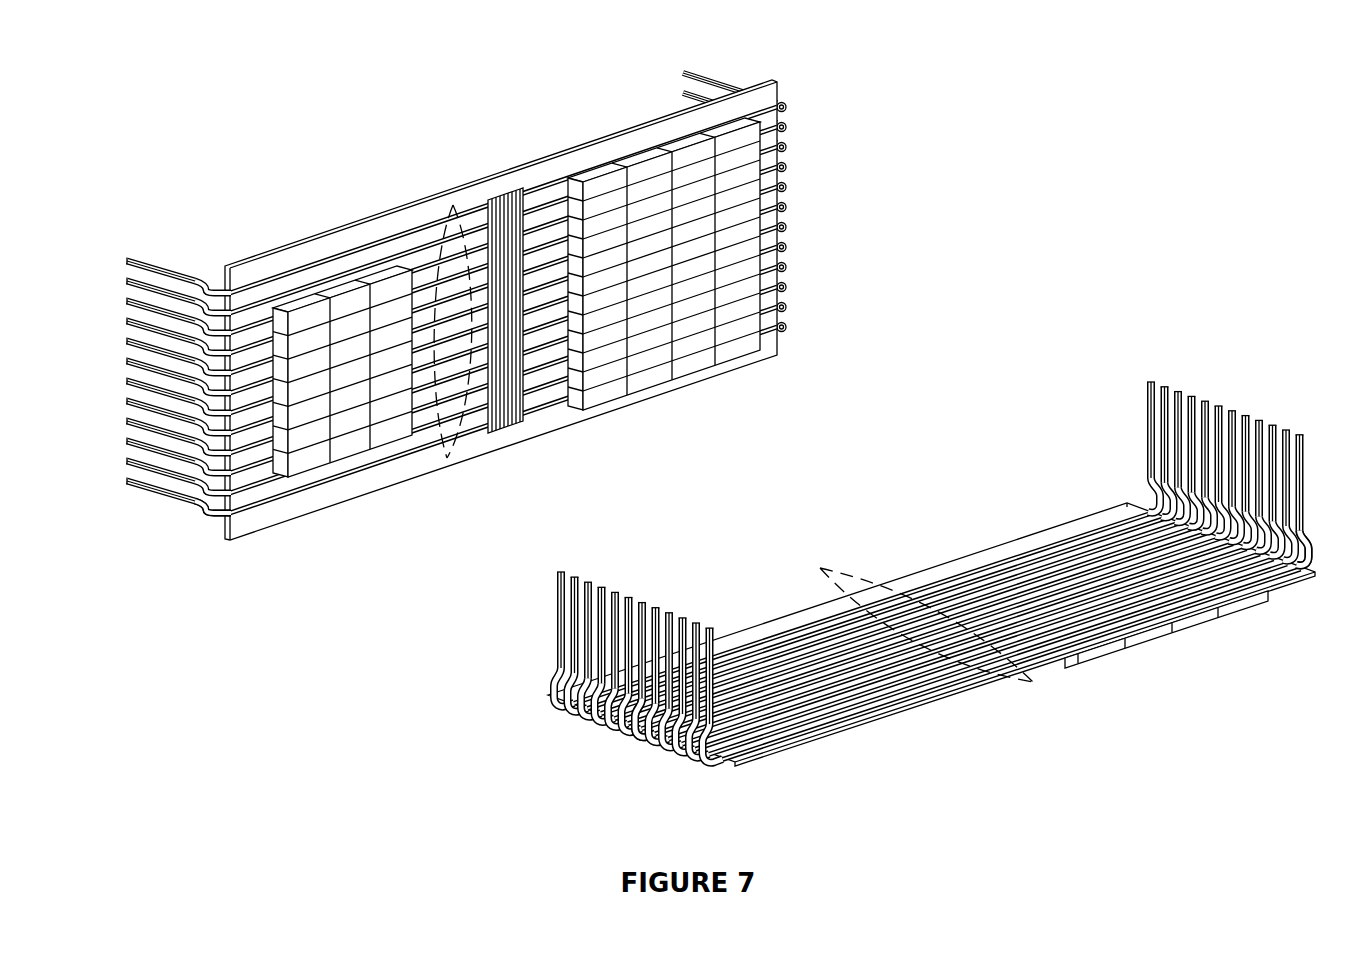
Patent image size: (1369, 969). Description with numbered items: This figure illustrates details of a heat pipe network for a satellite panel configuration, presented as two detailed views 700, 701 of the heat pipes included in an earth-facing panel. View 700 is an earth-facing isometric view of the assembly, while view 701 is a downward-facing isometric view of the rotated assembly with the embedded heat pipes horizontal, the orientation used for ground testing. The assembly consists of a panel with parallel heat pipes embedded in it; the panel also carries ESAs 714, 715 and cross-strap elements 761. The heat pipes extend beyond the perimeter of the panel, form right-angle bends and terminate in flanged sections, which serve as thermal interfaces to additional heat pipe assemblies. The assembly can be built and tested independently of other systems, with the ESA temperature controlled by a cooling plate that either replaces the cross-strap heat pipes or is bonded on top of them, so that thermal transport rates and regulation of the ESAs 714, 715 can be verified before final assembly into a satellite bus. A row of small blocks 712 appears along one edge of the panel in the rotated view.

The detailed view 700 is at (453, 299).
The detailed view 701 is at (930, 538).
The mounting features 712 is at (1197, 626).
The ESA 714 is at (356, 336).
The ESA 715 is at (614, 233).
The cross-strap elements 761 is at (494, 193).